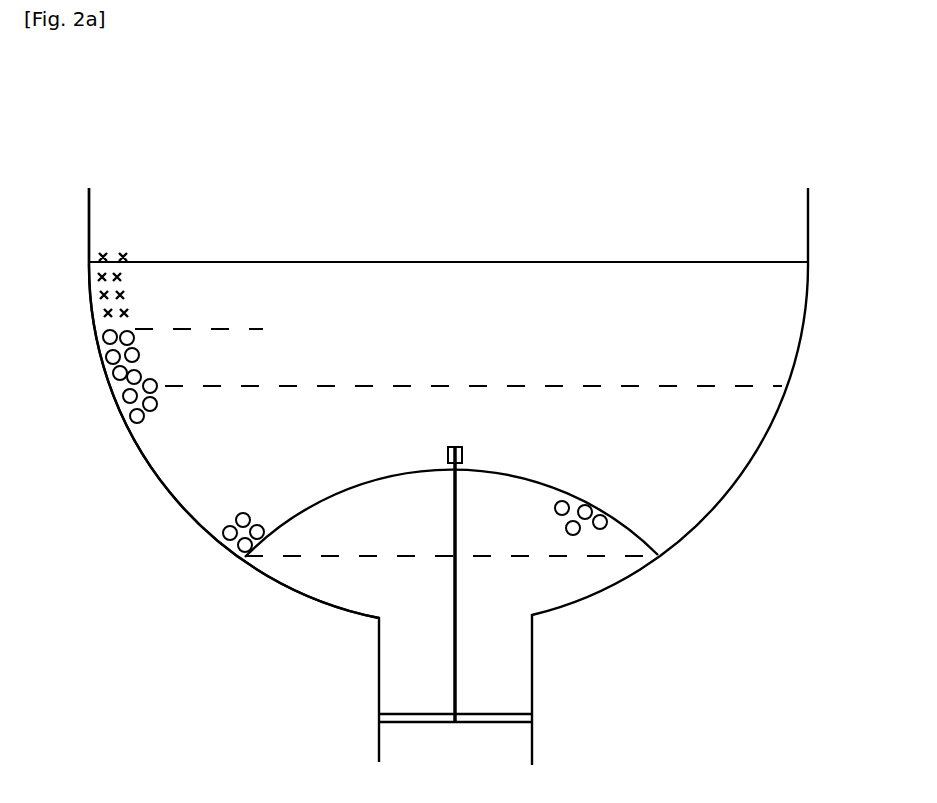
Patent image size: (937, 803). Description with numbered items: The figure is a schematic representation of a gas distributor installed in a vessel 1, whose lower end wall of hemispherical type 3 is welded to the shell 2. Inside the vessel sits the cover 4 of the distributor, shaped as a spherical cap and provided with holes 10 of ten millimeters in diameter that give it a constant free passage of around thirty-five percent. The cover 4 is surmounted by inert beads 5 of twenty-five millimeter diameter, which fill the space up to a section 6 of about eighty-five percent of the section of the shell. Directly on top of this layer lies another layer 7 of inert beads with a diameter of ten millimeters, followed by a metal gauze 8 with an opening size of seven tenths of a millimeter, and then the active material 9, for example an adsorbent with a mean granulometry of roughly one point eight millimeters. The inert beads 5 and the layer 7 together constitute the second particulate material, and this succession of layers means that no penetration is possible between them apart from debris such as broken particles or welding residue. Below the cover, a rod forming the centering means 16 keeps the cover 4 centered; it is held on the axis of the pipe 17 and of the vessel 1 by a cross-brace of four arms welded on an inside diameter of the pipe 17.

The vessel 1 is at (472, 168).
The shell 2 is at (90, 226).
The lower end wall of hemispherical type 3 is at (148, 464).
The cover 4 is at (523, 480).
The inert beads 5 is at (246, 515).
The section 6 is at (495, 386).
The layer of inert beads 7 is at (107, 354).
The metal gauze 8 is at (258, 329).
The active material 9 is at (98, 293).
The holes 10 is at (583, 506).
The centering means 16 is at (457, 622).
The pipe 17 is at (532, 746).